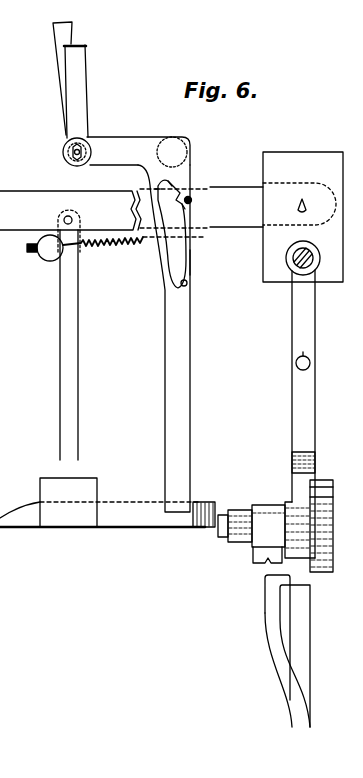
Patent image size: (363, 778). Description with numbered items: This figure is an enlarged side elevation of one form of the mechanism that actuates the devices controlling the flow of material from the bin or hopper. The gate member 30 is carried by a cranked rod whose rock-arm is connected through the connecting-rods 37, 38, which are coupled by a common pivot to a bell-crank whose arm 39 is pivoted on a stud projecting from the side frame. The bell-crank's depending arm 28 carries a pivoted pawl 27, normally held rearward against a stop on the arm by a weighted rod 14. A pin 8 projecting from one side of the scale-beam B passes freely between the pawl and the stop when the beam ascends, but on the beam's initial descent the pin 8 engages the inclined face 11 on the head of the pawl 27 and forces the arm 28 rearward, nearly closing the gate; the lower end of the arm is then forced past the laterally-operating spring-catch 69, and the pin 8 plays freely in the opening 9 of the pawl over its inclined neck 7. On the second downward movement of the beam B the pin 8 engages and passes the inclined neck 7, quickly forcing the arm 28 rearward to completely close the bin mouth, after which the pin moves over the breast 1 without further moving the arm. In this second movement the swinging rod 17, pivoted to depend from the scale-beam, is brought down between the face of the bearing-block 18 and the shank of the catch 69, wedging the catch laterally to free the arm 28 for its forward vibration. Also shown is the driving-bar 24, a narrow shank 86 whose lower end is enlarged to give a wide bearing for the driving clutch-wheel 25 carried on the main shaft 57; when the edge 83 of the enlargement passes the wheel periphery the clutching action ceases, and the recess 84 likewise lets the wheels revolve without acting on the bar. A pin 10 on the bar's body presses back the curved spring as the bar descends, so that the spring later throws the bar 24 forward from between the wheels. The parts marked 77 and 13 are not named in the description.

The connecting-rod 37 is at (54, 52).
The connecting-rod 38 is at (83, 72).
The bell-crank arm 39 is at (126, 152).
The depending arm 28 is at (164, 338).
The breast 1 is at (191, 224).
The scale-beam B is at (236, 207).
The pin 10 is at (303, 261).
The driving-bar 24 is at (315, 400).
The recess 84 is at (292, 461).
The shank 86 is at (300, 519).
The driving clutch-wheel 25 is at (333, 486).
The edge 83 is at (334, 496).
The main shaft 57 is at (223, 537).
The gate member 30 is at (276, 664).
The bar 77 is at (308, 605).
The spring-catch 69 is at (102, 514).
The bearing-block 18 is at (68, 502).
The swinging rod 17 is at (78, 357).
The weighted rod 14 is at (116, 250).
The opening 9 is at (172, 234).
The pin 8 is at (191, 199).
The inclined face 11 is at (170, 183).
The inclined neck 7 is at (186, 211).
The stud 13 is at (157, 194).
The pawl 27 is at (190, 264).